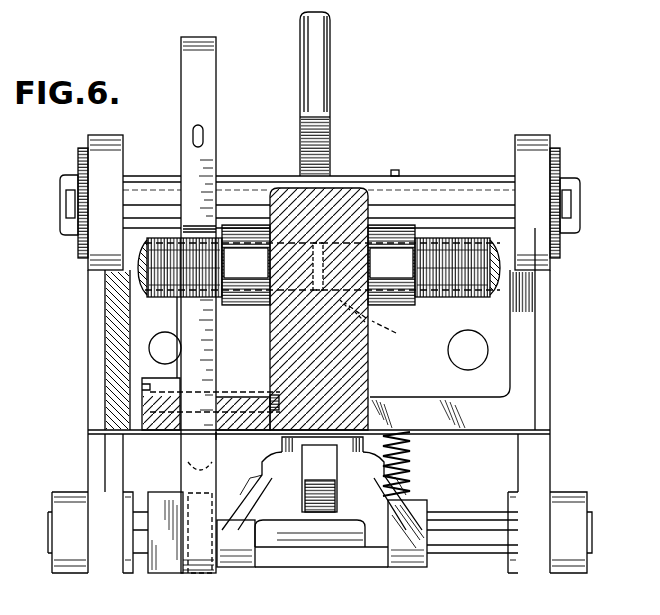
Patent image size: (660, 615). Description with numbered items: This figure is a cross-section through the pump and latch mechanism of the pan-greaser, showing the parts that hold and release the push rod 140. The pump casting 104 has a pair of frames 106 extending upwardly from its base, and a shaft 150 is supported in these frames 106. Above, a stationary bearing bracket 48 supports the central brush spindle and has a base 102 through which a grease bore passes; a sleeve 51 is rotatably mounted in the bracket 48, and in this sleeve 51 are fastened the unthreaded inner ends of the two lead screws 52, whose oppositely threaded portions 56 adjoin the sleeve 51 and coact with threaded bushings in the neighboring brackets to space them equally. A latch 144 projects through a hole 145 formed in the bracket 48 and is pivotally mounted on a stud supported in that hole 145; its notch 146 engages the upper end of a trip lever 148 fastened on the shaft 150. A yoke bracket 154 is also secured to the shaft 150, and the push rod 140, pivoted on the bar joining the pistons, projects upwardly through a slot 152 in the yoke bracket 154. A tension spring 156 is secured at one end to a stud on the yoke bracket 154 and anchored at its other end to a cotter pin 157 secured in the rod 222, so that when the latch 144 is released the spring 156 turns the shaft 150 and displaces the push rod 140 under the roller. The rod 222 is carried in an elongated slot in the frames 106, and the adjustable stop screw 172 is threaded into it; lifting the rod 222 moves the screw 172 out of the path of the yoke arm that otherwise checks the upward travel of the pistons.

The adjustable stop screw 172 is at (331, 98).
The rod 222 is at (368, 188).
The cotter pin 157 is at (397, 170).
The latch 144 is at (195, 447).
The notch 146 is at (190, 468).
The stationary bearing bracket 48 is at (350, 358).
The lead screws 52 is at (380, 322).
The oppositely threaded portions 56 is at (160, 296).
The sleeve 51 is at (245, 305).
The pump casting 104 is at (86, 377).
The base of bracket 102 is at (535, 388).
The frames 106 is at (98, 462).
The hole 145 is at (218, 432).
The trip lever 148 is at (163, 565).
The slot 152 is at (307, 462).
The push rod 140 is at (318, 503).
The yoke bracket 154 is at (375, 548).
The shaft 150 is at (473, 553).
The tension spring 156 is at (410, 463).